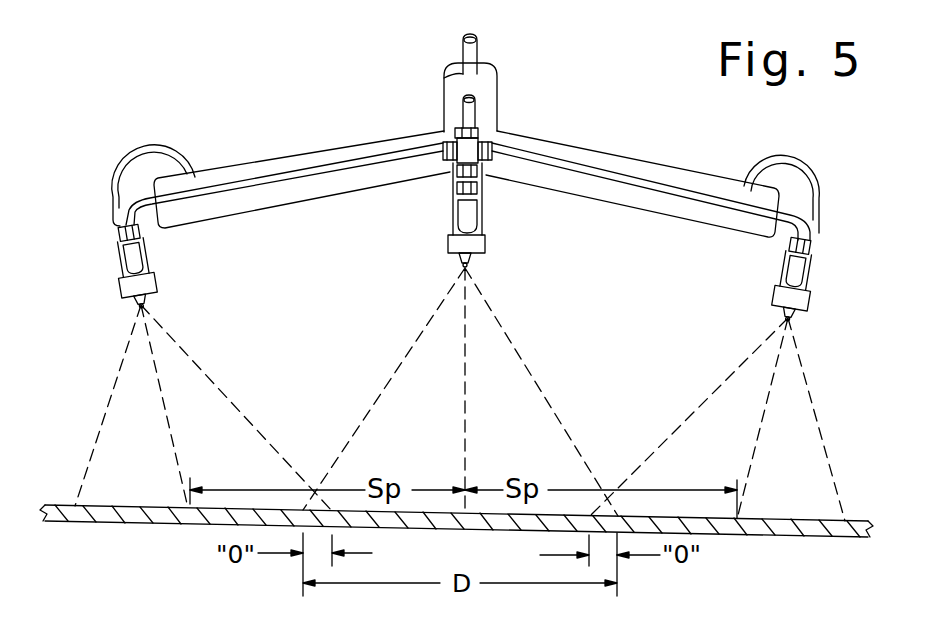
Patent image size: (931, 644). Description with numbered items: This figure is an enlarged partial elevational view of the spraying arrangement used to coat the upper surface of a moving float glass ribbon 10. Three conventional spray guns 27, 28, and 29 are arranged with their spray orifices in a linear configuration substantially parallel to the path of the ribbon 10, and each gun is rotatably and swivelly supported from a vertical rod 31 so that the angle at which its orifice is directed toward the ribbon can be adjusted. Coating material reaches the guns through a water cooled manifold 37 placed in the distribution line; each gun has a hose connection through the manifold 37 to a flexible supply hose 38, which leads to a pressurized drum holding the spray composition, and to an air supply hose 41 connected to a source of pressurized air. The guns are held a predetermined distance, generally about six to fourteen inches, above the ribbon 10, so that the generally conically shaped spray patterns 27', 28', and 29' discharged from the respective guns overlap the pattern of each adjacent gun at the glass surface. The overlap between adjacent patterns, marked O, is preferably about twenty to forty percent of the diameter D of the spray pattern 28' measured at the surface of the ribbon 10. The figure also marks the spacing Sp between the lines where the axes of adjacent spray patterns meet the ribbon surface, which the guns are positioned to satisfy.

The glass ribbon 10 is at (817, 535).
The spray gun 27 is at (162, 267).
The spray gun 28 is at (438, 215).
The spray gun 29 is at (767, 280).
The spray pattern 27' is at (203, 408).
The spray pattern 28' is at (460, 392).
The spray pattern 29' is at (733, 419).
The vertical rod 31 is at (497, 82).
The water cooled manifold 37 is at (470, 148).
The flexible supply hose 38 is at (464, 114).
The air supply hose 41 is at (462, 50).